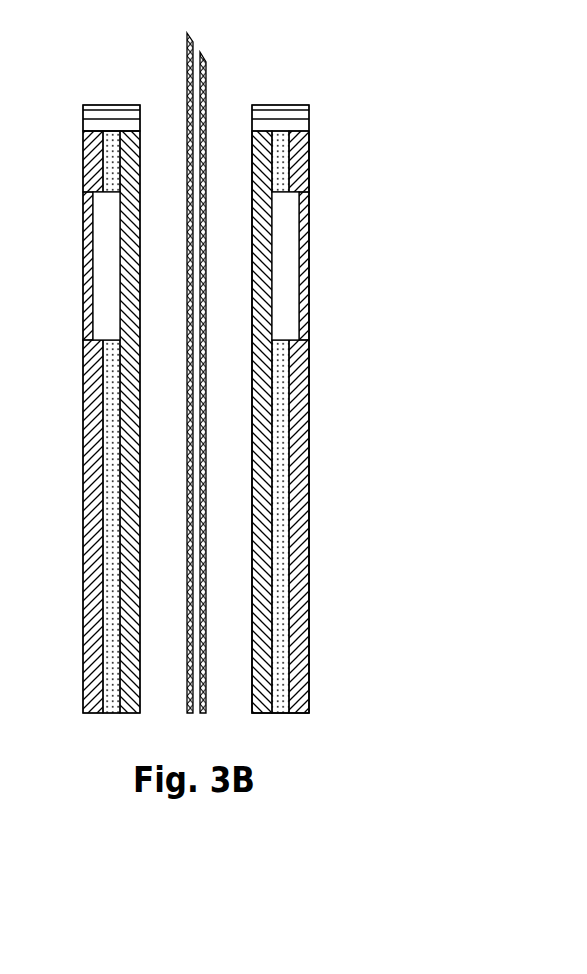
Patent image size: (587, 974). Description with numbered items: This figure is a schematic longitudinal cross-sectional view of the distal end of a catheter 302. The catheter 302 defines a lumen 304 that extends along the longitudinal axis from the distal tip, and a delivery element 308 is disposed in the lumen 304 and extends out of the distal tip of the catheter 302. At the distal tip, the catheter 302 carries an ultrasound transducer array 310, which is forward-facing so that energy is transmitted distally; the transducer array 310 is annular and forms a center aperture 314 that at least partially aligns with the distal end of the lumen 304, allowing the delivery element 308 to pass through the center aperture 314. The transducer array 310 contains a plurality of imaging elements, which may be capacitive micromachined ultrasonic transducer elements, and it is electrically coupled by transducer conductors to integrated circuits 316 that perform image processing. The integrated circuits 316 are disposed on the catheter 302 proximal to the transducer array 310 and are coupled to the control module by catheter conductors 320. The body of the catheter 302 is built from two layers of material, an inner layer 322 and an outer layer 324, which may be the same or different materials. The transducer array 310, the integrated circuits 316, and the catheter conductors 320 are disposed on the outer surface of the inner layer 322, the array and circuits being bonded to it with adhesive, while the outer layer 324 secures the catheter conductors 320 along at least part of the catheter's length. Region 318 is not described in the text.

The catheter 302 is at (405, 655).
The lumen 304 is at (237, 412).
The delivery element 308 is at (187, 68).
The ultrasound transducer array 310 is at (300, 119).
The center aperture 314 is at (232, 108).
The integrated circuits 316 is at (290, 311).
The inner channel upper portion 318 is at (285, 172).
The catheter conductors 320 is at (283, 537).
The inner layer 322 is at (262, 476).
The outer layer 324 is at (298, 598).